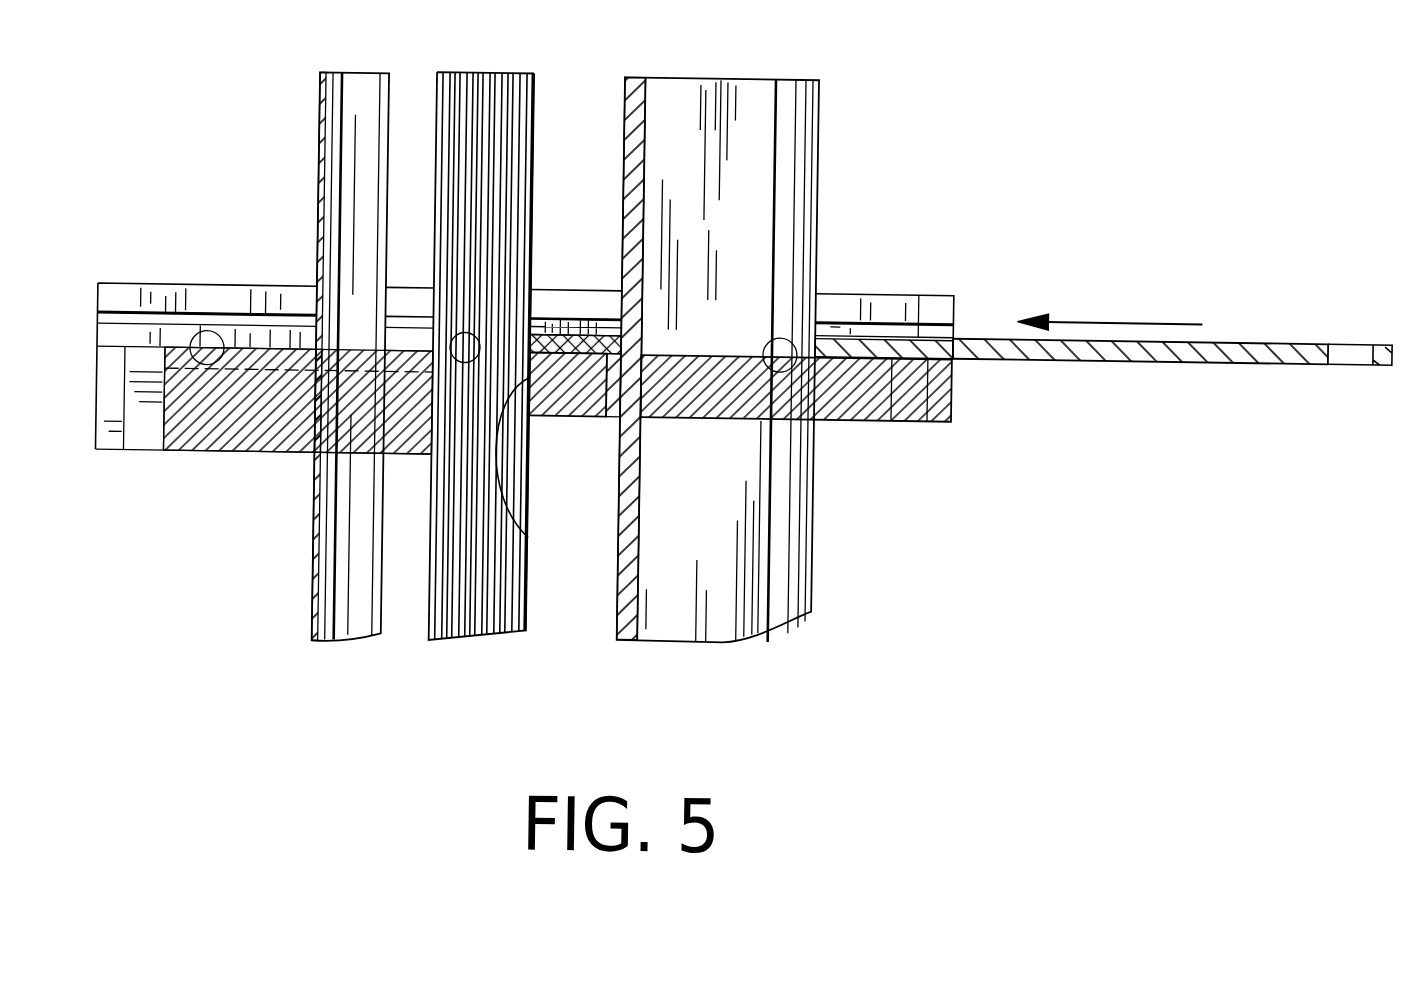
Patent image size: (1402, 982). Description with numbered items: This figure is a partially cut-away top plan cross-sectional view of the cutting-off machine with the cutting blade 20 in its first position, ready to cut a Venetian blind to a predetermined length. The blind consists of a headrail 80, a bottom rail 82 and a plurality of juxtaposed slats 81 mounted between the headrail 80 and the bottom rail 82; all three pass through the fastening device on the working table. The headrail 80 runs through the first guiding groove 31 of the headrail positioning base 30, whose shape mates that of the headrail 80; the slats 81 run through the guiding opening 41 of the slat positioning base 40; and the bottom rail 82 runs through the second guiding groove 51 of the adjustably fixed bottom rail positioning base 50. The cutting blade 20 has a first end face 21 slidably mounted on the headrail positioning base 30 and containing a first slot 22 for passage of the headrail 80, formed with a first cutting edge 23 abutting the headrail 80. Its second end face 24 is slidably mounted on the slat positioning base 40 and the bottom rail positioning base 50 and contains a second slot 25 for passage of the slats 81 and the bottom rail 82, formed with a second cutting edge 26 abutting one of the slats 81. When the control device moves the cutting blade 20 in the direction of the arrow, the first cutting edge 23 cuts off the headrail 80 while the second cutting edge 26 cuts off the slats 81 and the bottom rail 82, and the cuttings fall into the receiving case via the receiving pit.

The cutting blade 20 is at (1058, 353).
The first end face 21 is at (1213, 351).
The first slot 22 is at (823, 345).
The first cutting edge 23 is at (846, 351).
The second end face 24 is at (600, 351).
The second slot 25 is at (407, 344).
The second cutting edge 26 is at (548, 329).
The headrail positioning base 30 is at (863, 403).
The first guiding groove 31 is at (634, 421).
The slat positioning base 40 is at (566, 395).
The guiding opening 41 is at (531, 542).
The bottom rail positioning base 50 is at (398, 446).
The second guiding groove 51 is at (321, 459).
The headrail 80 is at (800, 547).
The slats 81 is at (496, 620).
The bottom rail 82 is at (352, 635).